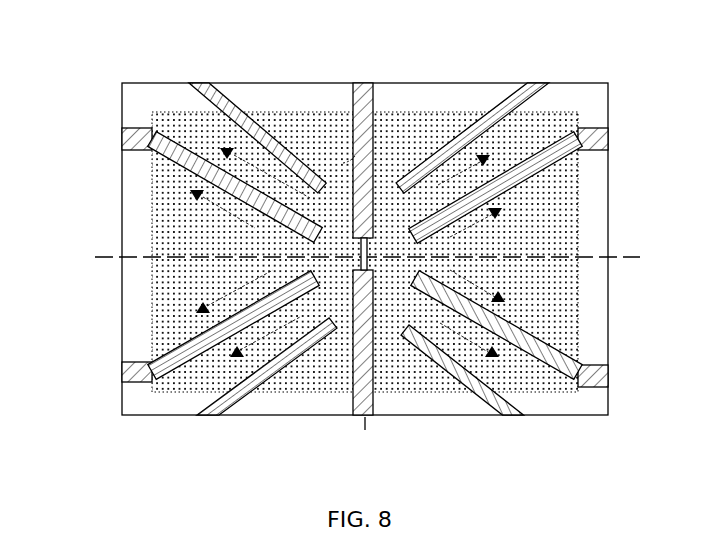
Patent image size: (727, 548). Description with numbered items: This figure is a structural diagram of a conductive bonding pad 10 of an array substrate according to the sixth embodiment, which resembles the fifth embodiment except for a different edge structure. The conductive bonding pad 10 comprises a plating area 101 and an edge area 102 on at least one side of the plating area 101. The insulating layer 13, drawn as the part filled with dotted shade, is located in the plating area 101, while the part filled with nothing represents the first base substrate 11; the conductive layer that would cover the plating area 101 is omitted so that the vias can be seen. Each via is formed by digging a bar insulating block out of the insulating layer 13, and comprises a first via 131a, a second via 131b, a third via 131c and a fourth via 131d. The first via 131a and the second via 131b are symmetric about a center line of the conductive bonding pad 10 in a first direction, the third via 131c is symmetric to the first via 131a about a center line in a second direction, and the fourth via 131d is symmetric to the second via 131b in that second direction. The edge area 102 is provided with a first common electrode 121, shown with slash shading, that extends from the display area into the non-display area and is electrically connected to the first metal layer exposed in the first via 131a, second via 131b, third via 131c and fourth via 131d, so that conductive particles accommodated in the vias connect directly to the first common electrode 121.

The conductive bonding pad 10 is at (387, 57).
The first base substrate 11 is at (583, 350).
The insulating layer 13 is at (557, 220).
The plating area 101 is at (332, 383).
The edge area 102 is at (468, 403).
The first common electrode 121 is at (122, 129).
The first via 131a is at (160, 172).
The second via 131b is at (577, 156).
The third via 131c is at (167, 355).
The fourth via 131d is at (580, 315).